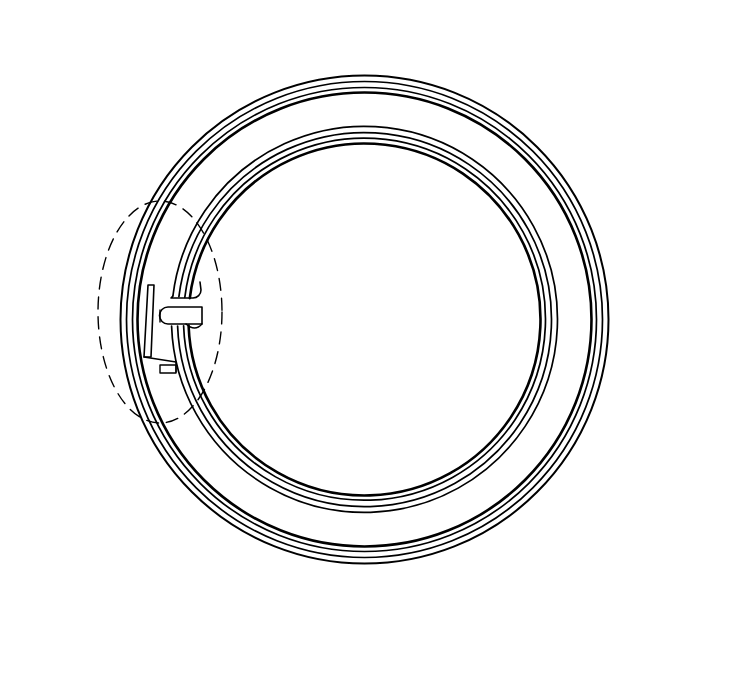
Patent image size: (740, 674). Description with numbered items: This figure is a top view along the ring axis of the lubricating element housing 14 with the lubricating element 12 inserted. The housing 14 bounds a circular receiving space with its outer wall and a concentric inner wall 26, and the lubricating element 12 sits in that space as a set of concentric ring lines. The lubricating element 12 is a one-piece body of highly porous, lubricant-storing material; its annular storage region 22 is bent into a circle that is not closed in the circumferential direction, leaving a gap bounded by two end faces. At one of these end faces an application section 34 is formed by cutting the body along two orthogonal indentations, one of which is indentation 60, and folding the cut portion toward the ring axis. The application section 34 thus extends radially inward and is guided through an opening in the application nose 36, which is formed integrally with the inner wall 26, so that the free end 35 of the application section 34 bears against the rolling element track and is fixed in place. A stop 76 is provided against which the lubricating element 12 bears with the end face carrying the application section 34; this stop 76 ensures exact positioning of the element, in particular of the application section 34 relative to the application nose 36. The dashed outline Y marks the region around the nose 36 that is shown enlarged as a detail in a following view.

The lubricating element 12 is at (460, 120).
The lubricating element housing 14 is at (298, 76).
The annular storage region 22 is at (378, 107).
The inner wall 26 is at (520, 231).
The application nose 36 is at (200, 290).
The free end 35 is at (202, 316).
The application section 34 is at (168, 313).
The indentation 60 is at (147, 302).
The stop 76 is at (160, 372).
The detail Y is at (222, 277).